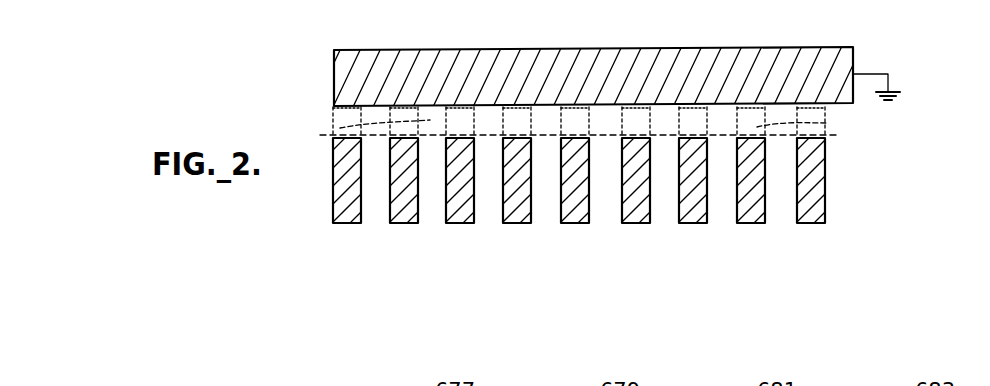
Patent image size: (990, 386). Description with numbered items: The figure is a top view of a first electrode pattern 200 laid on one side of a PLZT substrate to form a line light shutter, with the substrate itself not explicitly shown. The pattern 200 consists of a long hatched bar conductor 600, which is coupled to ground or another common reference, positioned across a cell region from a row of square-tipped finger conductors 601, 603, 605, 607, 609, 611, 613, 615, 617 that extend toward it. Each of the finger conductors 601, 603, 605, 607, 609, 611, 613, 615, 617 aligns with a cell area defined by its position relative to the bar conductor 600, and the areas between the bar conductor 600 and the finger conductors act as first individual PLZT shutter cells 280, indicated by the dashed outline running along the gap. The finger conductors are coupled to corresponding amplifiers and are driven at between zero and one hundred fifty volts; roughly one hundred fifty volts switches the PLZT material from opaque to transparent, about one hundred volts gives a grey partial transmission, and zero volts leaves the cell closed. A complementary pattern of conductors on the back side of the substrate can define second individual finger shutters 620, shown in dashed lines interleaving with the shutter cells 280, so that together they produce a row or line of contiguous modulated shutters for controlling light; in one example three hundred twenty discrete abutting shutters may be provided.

The bar conductor 600 is at (853, 49).
The pattern 200 is at (930, 74).
The second individual finger shutters 620 is at (440, 126).
The first individual PLZT shutter cells 280 is at (346, 135).
The finger conductor 601 is at (345, 224).
The finger conductor 603 is at (400, 224).
The finger conductor 605 is at (456, 224).
The finger conductor 607 is at (512, 224).
The finger conductor 609 is at (570, 224).
The finger conductor 611 is at (630, 224).
The finger conductor 613 is at (686, 224).
The finger conductor 615 is at (744, 224).
The finger conductor 617 is at (806, 224).